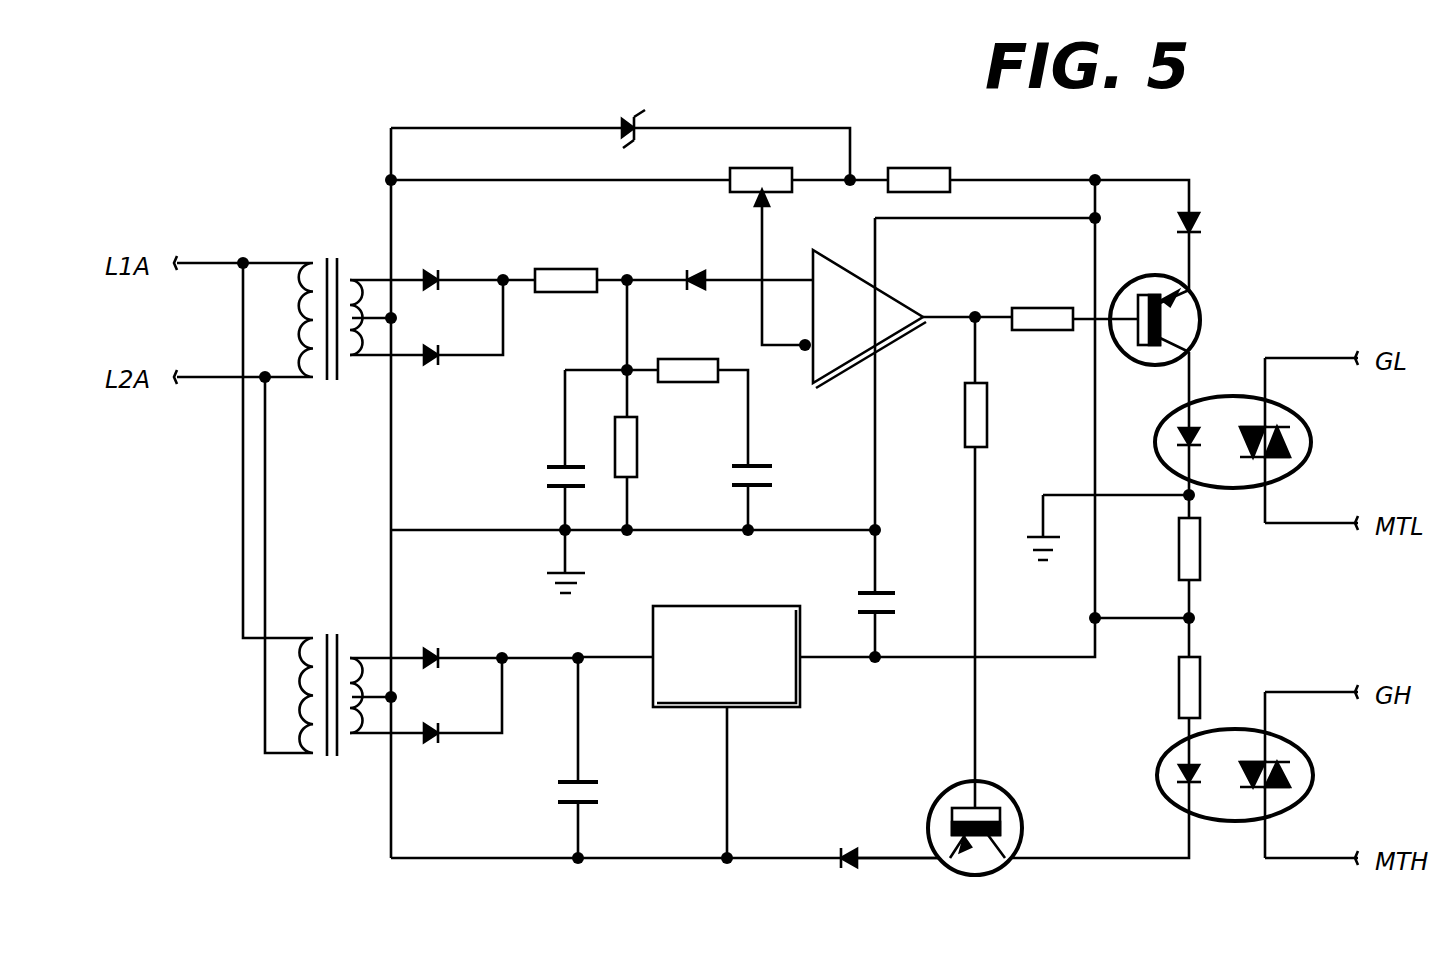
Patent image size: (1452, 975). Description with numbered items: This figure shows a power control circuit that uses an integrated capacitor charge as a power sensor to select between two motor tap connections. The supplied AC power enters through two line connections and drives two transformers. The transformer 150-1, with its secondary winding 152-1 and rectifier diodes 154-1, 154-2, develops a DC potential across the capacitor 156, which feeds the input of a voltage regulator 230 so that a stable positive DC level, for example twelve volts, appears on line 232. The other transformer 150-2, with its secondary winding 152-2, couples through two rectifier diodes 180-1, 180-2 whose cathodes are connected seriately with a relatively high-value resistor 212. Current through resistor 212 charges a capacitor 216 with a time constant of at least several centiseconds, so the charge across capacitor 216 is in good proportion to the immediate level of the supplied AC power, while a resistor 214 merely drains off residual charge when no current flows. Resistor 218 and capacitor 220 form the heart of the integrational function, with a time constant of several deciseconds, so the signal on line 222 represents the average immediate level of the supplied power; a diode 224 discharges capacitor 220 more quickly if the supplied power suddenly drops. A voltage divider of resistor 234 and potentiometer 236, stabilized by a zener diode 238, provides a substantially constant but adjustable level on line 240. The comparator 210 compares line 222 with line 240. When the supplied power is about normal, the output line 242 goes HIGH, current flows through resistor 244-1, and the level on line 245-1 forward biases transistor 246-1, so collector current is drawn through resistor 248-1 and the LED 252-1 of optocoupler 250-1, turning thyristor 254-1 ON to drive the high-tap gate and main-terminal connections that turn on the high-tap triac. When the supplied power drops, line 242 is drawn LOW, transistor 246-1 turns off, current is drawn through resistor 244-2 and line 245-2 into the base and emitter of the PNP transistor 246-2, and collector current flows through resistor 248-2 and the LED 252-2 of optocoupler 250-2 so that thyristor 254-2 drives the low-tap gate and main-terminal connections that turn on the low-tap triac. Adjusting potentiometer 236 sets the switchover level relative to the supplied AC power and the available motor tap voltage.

The transformer 150-1 is at (354, 700).
The transformer 150-2 is at (352, 319).
The secondary winding 152-1 is at (376, 750).
The secondary winding 152-2 is at (372, 368).
The rectifier diode 154-1 is at (478, 618).
The rectifier diode 154-2 is at (428, 750).
The capacitor 156 is at (614, 774).
The rectifier diode 180-1 is at (452, 268).
The rectifier diode 180-2 is at (452, 346).
The comparator 210 is at (897, 298).
The resistor 212 is at (560, 264).
The resistor 214 is at (545, 476).
The capacitor 216 is at (672, 440).
The resistor 218 is at (691, 350).
The capacitor 220 is at (776, 483).
The line 222 is at (787, 276).
The diode 224 is at (680, 272).
The voltage regulator 230 is at (678, 597).
The line 232 is at (1110, 175).
The resistor 234 is at (940, 164).
The potentiometer 236 is at (740, 194).
The zener diode 238 is at (618, 116).
The line 240 is at (802, 352).
The output line 242 is at (987, 308).
The resistor 244-1 is at (1025, 410).
The resistor 244-2 is at (1050, 332).
The line 245-1 is at (990, 727).
The base lead 245-2 is at (1095, 297).
The transistor 246-1 is at (935, 810).
The PNP transistor 246-2 is at (1200, 300).
The resistor 248-1 is at (1240, 670).
The resistor 248-2 is at (1207, 580).
The optocoupler 250-1 is at (1226, 801).
The optocoupler 250-2 is at (1248, 420).
The LED 252-1 is at (1176, 773).
The LED 252-2 is at (1176, 434).
The thyristor 254-1 is at (1292, 775).
The thyristor 254-2 is at (1292, 445).